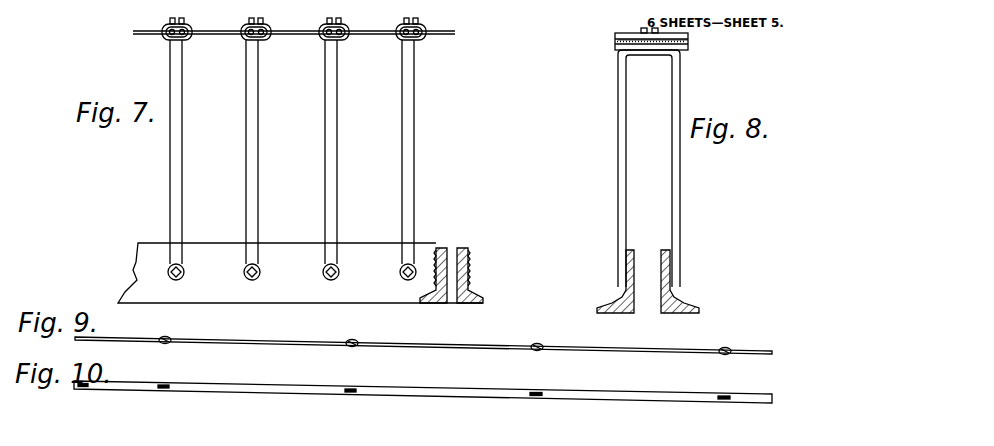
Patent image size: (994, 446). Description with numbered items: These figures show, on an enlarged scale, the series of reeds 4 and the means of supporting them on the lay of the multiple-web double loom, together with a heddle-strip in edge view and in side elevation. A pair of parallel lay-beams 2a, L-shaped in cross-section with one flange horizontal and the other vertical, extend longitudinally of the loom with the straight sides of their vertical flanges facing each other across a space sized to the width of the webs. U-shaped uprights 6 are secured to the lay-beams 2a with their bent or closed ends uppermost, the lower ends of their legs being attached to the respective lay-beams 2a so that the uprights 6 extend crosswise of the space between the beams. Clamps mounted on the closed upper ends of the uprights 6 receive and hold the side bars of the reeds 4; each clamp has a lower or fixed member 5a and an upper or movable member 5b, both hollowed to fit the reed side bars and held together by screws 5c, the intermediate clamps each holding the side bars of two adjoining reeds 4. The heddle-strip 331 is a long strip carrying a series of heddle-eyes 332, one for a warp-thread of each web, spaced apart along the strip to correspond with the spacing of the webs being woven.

In FIG. 7, the lay-beam 2a is at (471, 253).
In FIG. 8, the lay-beam 2a is at (705, 262).
In FIG. 7, the reed 4 is at (150, 36).
In FIG. 8, the reed 4 is at (655, 44).
In FIG. 7, the lower or fixed clamp member 5a is at (245, 43).
In FIG. 8, the lower or fixed clamp member 5a is at (614, 51).
In FIG. 7, the upper or movable clamp member 5b is at (403, 30).
In FIG. 8, the upper or movable clamp member 5b is at (680, 32).
In FIG. 7, the screw 5c is at (342, 24).
In FIG. 8, the screw 5c is at (644, 32).
In FIG. 7, the upright 6 is at (168, 177).
In FIG. 8, the upright 6 is at (616, 175).
In FIG. 9, the heddle-strip 331 is at (267, 337).
In FIG. 10, the heddle-strip 331 is at (225, 396).
In FIG. 9, the heddle-eye 332 is at (165, 346).
In FIG. 10, the heddle-eye 332 is at (540, 402).